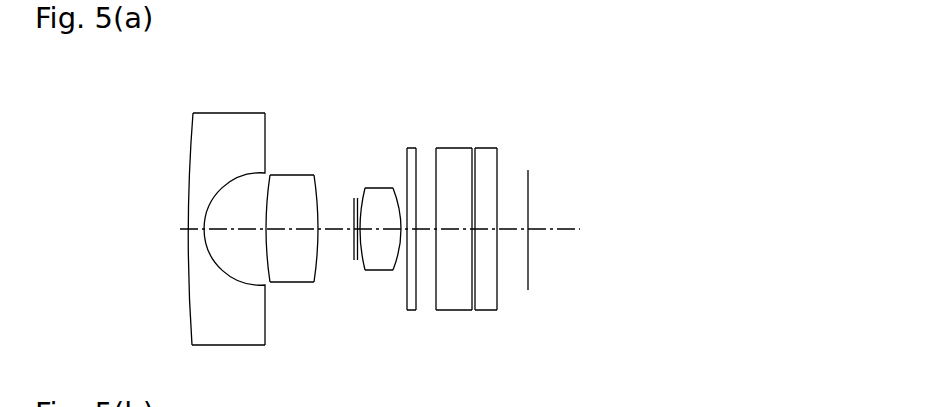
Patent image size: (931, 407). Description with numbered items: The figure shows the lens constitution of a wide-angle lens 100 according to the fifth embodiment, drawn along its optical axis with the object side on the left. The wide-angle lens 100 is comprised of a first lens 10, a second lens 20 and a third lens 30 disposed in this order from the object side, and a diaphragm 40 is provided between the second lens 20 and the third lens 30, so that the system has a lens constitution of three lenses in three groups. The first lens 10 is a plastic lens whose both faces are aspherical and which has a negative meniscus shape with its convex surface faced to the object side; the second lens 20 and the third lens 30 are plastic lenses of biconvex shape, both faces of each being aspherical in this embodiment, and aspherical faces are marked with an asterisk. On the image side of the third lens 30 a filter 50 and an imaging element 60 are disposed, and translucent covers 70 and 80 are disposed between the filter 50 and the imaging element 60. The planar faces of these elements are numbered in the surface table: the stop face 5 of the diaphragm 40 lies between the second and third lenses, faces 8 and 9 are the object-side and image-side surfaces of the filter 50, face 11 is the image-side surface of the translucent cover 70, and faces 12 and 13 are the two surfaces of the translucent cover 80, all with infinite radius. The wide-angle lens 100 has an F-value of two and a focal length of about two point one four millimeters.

The wide-angle lens 100 is at (494, 92).
The first lens 10 is at (343, 199).
The second lens 20 is at (292, 219).
The third lens 30 is at (398, 227).
The diaphragm 40 is at (344, 235).
The filter 50 is at (448, 223).
The imaging element 60 is at (530, 170).
The translucent cover 70 is at (511, 205).
The translucent cover 80 is at (539, 205).
The stop surface 5 is at (356, 245).
The object-side face of filter 8 is at (408, 279).
The image-side face of filter 9 is at (416, 271).
The image-side face of first translucent cover 11 is at (472, 271).
The object-side face of second translucent cover 12 is at (475, 251).
The image-side face of second translucent cover 13 is at (497, 238).